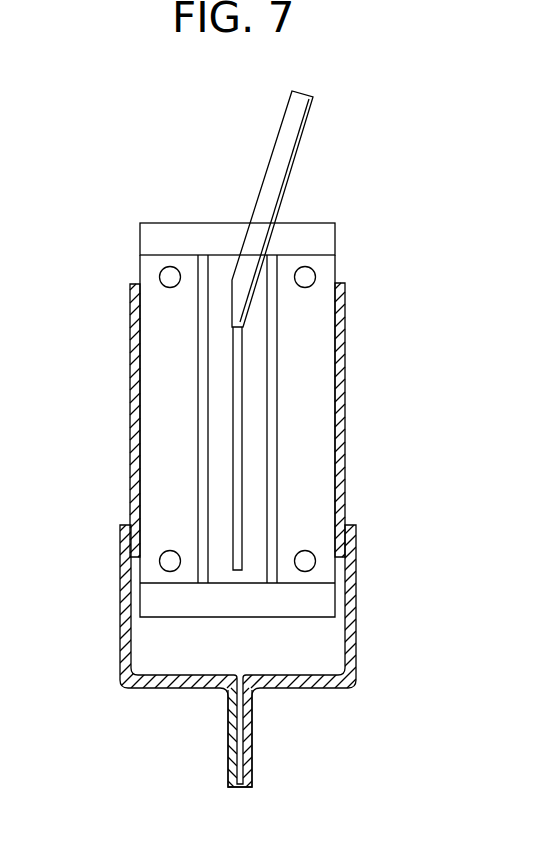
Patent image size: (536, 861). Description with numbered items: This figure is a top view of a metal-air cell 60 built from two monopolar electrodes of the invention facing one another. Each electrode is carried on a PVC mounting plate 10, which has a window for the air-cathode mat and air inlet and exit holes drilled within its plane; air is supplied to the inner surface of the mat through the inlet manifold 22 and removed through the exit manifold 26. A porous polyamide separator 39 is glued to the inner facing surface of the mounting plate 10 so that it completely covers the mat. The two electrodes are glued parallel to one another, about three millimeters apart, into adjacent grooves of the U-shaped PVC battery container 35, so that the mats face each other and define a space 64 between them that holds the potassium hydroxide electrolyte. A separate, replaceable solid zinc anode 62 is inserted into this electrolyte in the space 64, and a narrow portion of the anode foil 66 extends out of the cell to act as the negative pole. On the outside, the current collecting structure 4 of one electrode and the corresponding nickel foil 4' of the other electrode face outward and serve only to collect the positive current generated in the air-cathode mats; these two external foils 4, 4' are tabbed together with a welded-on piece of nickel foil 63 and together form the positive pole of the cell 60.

The current collecting structure 4 is at (106, 420).
The nickel foil 4' is at (363, 420).
The mounting plate 10 is at (149, 472).
The inlet manifold 22 is at (171, 553).
The exit manifold 26 is at (159, 277).
The battery container 35 is at (176, 233).
The porous polyamide separator 39 is at (199, 462).
The cell 60 is at (355, 452).
The zinc anode 62 is at (237, 485).
The nickel foil tab 63 is at (240, 740).
The space 64 is at (257, 403).
The foil portion 66 is at (293, 128).